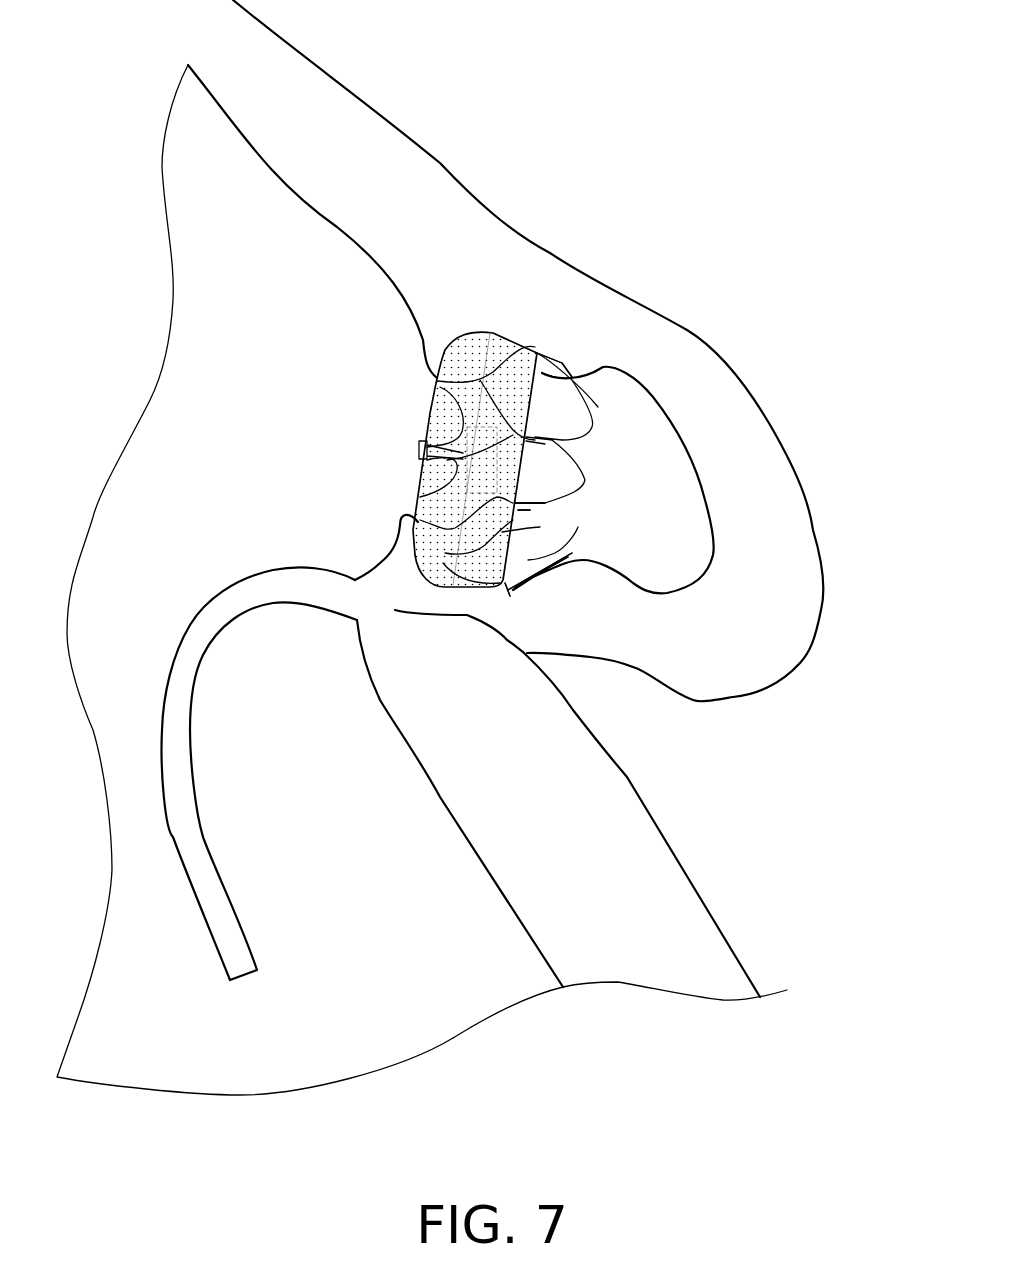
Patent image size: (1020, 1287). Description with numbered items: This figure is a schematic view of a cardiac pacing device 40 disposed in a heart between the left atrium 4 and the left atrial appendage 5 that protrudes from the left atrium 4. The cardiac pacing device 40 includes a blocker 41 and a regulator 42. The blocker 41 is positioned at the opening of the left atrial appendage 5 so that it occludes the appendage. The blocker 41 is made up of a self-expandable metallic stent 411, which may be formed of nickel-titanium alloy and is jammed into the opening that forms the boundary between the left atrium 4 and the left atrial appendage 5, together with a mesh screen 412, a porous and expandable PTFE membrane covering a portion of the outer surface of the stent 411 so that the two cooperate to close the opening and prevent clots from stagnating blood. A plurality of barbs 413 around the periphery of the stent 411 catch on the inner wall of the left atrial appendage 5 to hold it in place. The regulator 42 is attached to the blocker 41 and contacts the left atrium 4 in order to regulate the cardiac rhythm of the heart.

The left atrium 4 is at (266, 265).
The cardiac pacing device 40 is at (405, 407).
The blocker 41 is at (615, 498).
The self-expandable metallic stent 411 is at (573, 517).
The mesh screen 412 is at (502, 532).
The barbs 413 is at (547, 347).
The regulator 42 is at (423, 437).
The left atrial appendage 5 is at (685, 568).